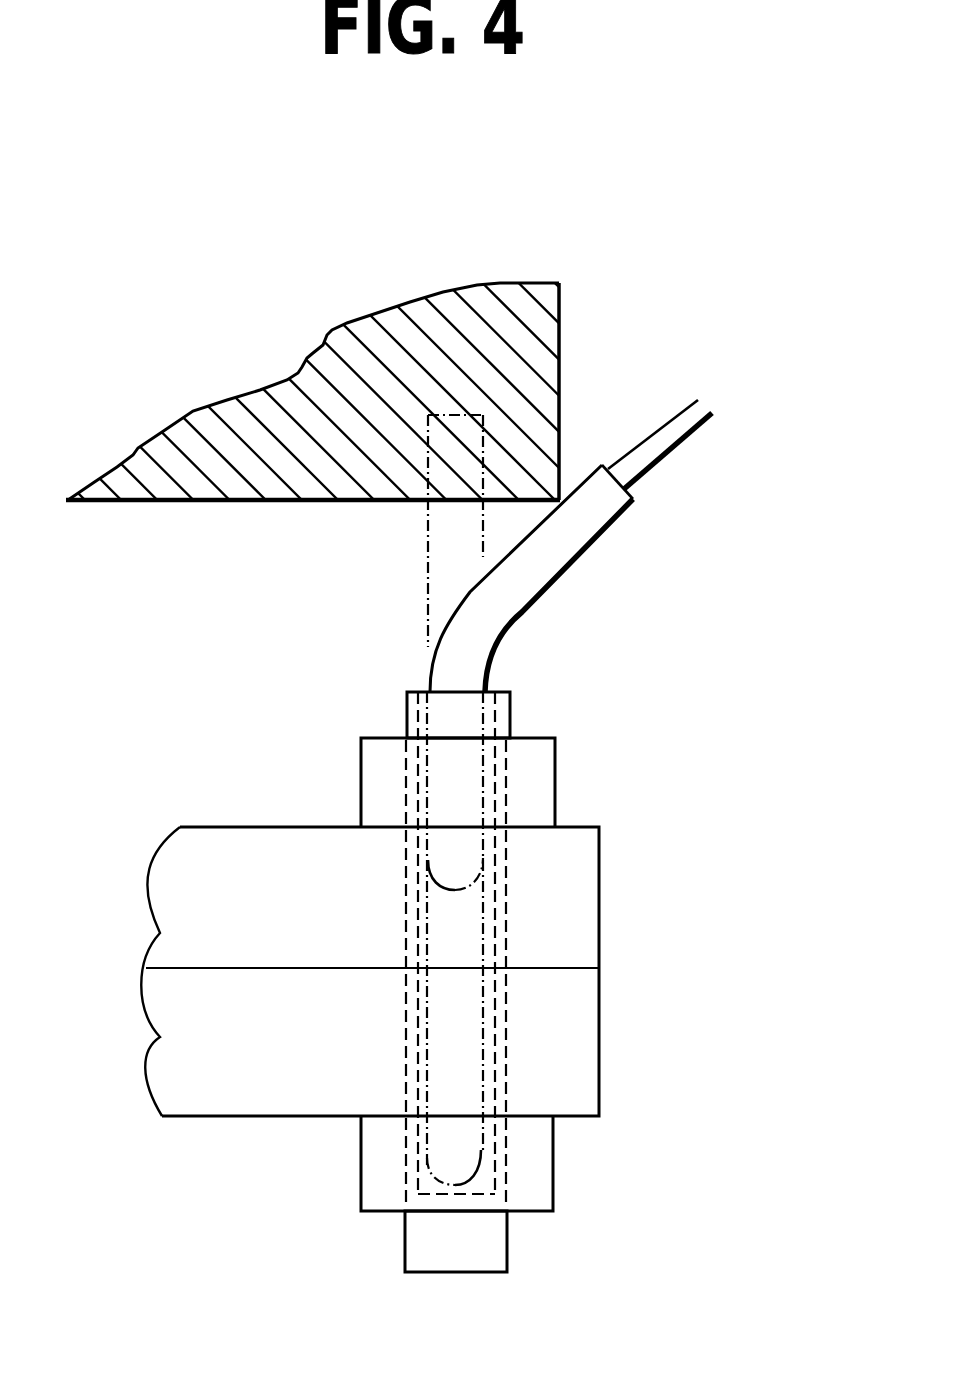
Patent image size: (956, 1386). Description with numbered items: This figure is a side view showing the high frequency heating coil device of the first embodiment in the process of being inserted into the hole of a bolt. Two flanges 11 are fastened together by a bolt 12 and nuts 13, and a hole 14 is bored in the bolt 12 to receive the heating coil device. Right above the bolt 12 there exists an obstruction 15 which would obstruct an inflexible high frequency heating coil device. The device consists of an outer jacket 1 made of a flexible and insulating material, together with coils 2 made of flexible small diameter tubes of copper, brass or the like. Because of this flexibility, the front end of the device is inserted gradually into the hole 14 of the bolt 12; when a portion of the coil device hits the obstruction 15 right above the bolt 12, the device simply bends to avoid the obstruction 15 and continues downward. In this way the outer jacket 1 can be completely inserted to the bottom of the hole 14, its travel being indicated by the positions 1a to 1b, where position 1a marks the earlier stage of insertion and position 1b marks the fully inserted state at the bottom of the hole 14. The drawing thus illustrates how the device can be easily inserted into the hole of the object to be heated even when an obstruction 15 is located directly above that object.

The outer jacket 1 is at (620, 513).
The position of outer jacket 1a is at (423, 887).
The position of outer jacket 1b is at (476, 1180).
The coils 2 is at (707, 423).
The flanges 11 is at (599, 932).
The bolt 12 is at (512, 711).
The nuts 13 is at (556, 760).
The hole 14 is at (507, 857).
The obstruction 15 is at (543, 282).